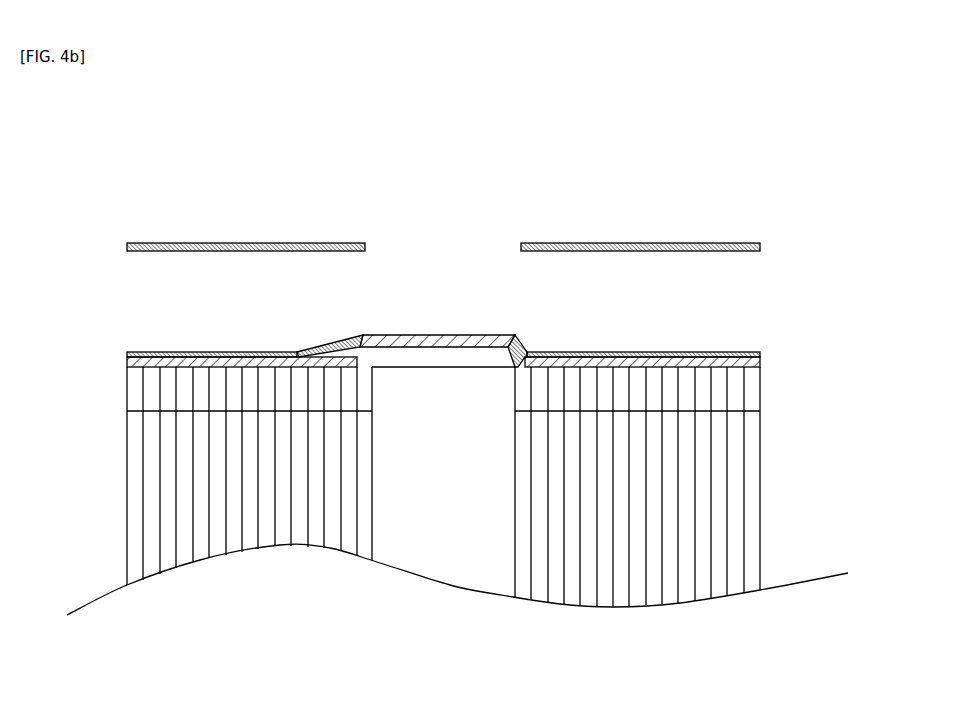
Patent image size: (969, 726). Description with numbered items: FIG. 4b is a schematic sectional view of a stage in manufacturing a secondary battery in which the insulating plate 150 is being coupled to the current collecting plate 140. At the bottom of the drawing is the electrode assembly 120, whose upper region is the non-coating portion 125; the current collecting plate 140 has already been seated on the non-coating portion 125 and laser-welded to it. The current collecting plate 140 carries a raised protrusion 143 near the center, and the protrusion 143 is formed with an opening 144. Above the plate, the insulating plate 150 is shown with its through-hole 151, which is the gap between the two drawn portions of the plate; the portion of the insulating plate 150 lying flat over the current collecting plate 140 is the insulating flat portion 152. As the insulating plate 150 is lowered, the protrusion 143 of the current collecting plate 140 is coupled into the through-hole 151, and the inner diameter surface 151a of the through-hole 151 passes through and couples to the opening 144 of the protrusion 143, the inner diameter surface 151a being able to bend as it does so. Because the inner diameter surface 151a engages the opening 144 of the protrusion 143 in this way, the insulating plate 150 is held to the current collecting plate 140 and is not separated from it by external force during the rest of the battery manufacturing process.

The electrode assembly 120 is at (766, 498).
The non-coating portion 125 is at (752, 400).
The current collecting plate 140 is at (766, 361).
The protrusion 143 is at (519, 334).
The opening 144 is at (360, 355).
The insulating plate 150 is at (130, 351).
The through-hole 151 is at (461, 248).
The inner diameter surface 151a is at (366, 247).
The insulating flat portion 152 is at (665, 248).